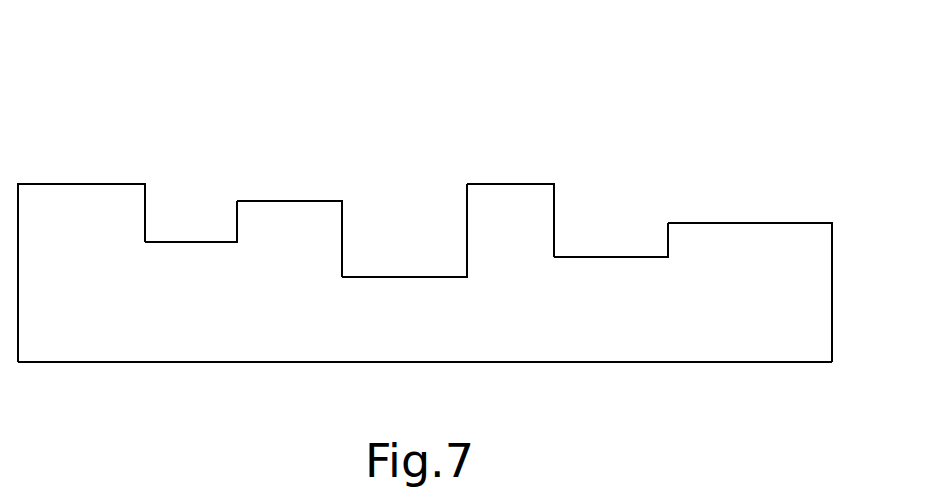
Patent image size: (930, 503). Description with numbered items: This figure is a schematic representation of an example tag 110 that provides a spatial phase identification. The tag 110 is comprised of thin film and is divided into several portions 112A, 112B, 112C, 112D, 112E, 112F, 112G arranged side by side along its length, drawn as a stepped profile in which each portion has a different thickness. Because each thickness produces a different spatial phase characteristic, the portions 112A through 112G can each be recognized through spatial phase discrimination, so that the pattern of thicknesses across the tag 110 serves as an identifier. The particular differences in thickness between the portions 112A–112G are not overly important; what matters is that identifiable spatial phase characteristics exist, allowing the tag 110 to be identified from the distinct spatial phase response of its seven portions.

The tag 110 is at (212, 52).
The portion 112A is at (60, 198).
The portion 112B is at (194, 253).
The portion 112C is at (292, 210).
The portion 112D is at (403, 280).
The portion 112E is at (508, 197).
The portion 112F is at (616, 272).
The portion 112G is at (753, 238).